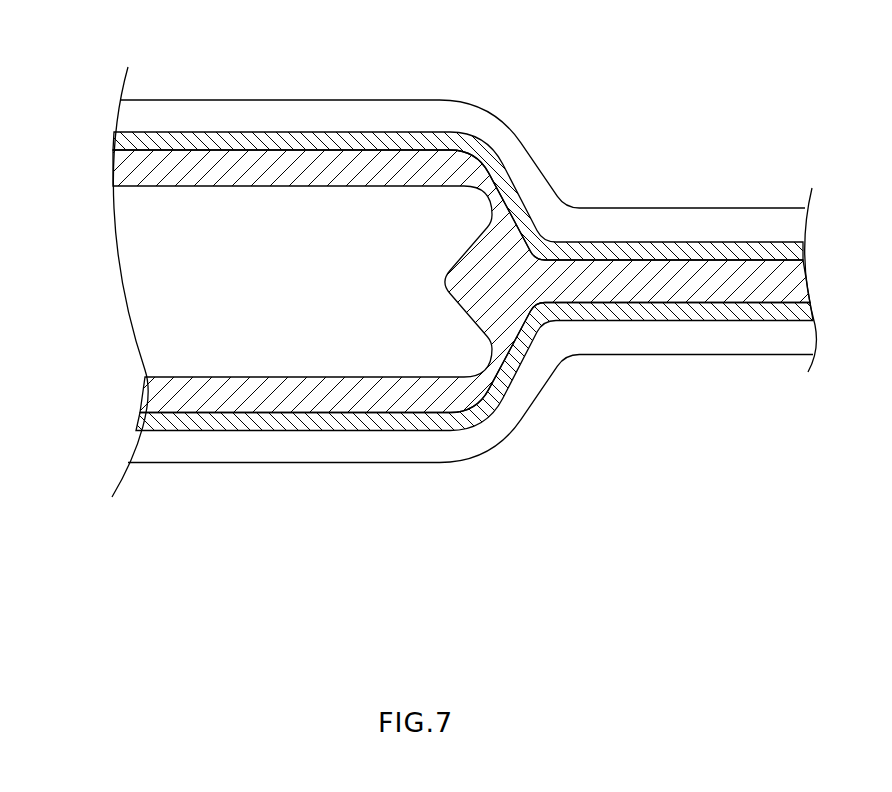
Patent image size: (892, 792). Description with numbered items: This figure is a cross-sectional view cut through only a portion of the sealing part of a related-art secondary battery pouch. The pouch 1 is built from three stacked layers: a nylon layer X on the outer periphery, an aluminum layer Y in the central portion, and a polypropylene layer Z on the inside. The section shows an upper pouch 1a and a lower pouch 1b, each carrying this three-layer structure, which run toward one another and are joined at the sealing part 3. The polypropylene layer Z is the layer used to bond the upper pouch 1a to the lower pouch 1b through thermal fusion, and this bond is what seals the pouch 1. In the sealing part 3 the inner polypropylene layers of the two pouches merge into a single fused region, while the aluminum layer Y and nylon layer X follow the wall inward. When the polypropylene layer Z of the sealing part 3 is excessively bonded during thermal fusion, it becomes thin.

The pouch 1 is at (435, 280).
The upper pouch 1a is at (277, 99).
The lower pouch 1b is at (281, 463).
The sealing part 3 is at (712, 208).
The nylon layer X is at (434, 285).
The aluminum layer Y is at (117, 138).
The polypropylene layer Z is at (125, 168).